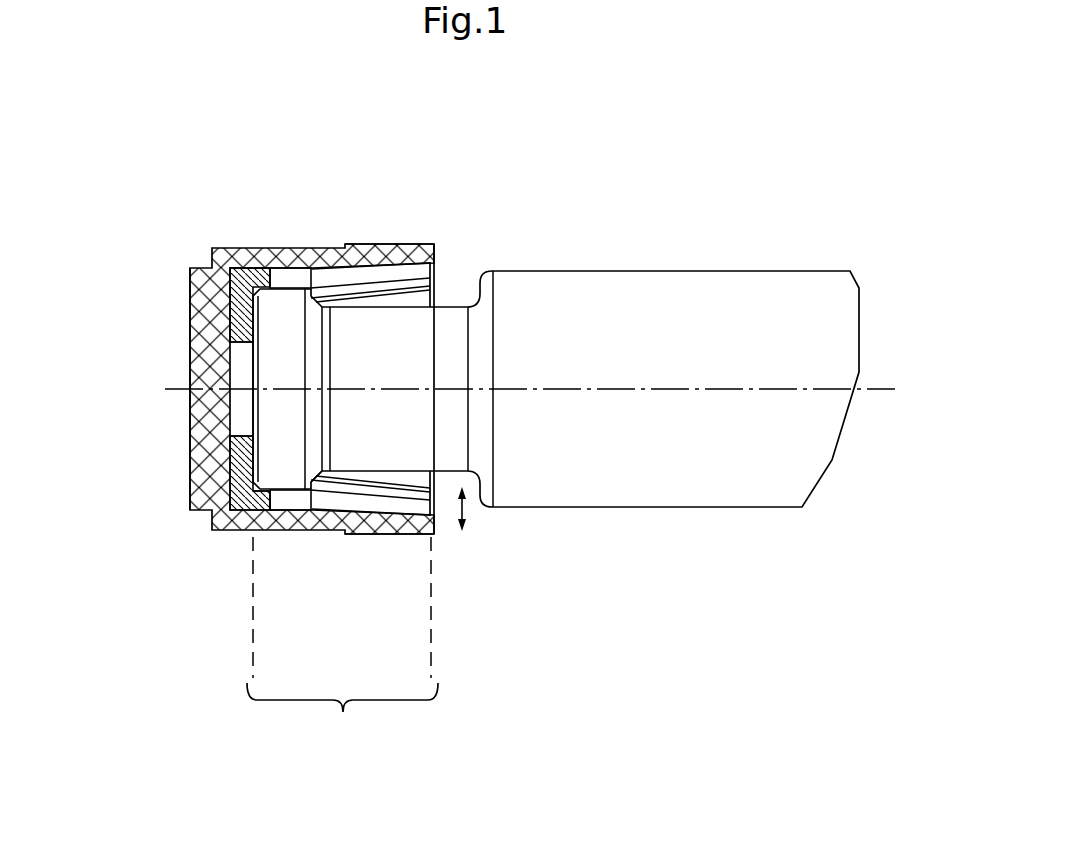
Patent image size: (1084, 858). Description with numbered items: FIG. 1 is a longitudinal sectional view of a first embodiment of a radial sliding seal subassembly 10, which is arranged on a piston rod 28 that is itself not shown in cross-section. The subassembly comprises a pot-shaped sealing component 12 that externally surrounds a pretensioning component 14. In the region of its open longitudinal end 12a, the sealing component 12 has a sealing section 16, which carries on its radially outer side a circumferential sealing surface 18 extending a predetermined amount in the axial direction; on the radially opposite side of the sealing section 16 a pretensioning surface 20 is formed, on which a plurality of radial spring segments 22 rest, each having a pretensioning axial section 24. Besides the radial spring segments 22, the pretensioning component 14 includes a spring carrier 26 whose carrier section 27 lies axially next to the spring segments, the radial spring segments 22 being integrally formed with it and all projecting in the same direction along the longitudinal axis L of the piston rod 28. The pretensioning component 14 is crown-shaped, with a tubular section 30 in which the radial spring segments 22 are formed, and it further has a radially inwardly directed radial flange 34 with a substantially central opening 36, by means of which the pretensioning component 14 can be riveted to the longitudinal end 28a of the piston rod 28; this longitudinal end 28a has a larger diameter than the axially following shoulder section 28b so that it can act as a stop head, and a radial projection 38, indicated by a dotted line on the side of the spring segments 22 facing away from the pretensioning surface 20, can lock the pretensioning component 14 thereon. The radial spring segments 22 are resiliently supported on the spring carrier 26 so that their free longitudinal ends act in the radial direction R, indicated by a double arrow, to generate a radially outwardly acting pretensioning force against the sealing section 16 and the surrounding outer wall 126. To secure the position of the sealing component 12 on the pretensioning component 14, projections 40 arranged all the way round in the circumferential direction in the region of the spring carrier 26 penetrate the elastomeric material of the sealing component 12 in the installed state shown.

The radial sliding seal subassembly 10 is at (349, 196).
The sealing component 12 is at (207, 495).
The open longitudinal end 12a is at (447, 258).
The pretensioning component 14 is at (300, 282).
The sealing section 16 is at (401, 568).
The sealing surface 18 is at (385, 522).
The pretensioning surface 20 is at (433, 512).
The radial spring segments 22 is at (422, 302).
The pretensioning axial section 24 is at (393, 247).
The spring carrier 26 is at (238, 468).
The carrier section 27 is at (258, 510).
The piston rod 28 is at (693, 488).
The longitudinal end 28a is at (300, 424).
The shoulder section 28b is at (430, 426).
The tubular section 30 is at (342, 641).
The radial flange 34 is at (238, 320).
The central opening 36 is at (247, 370).
The radial projection 38 is at (342, 477).
The projections 40 is at (259, 268).
The outer wall 126 is at (215, 405).
The longitudinal axis L is at (870, 388).
The radial direction R is at (470, 514).